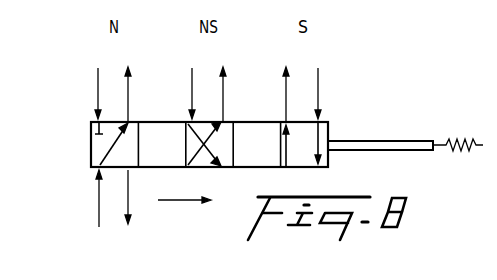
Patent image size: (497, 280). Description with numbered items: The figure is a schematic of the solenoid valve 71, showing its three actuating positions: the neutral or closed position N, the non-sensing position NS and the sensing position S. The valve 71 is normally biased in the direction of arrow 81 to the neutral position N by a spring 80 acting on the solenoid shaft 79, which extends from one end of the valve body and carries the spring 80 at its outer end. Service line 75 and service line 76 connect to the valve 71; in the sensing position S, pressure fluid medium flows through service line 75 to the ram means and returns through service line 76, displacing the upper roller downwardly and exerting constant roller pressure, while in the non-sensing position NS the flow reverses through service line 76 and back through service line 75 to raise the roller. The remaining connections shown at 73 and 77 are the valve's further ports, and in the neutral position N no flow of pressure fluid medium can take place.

The solenoid valve 71 is at (91, 147).
The inlet port 73 is at (99, 208).
The service line 75 is at (192, 84).
The service line 76 is at (222, 84).
The exhaust port 77 is at (129, 208).
The solenoid shaft 79 is at (397, 142).
The spring 80 is at (470, 153).
The arrow 81 is at (180, 195).